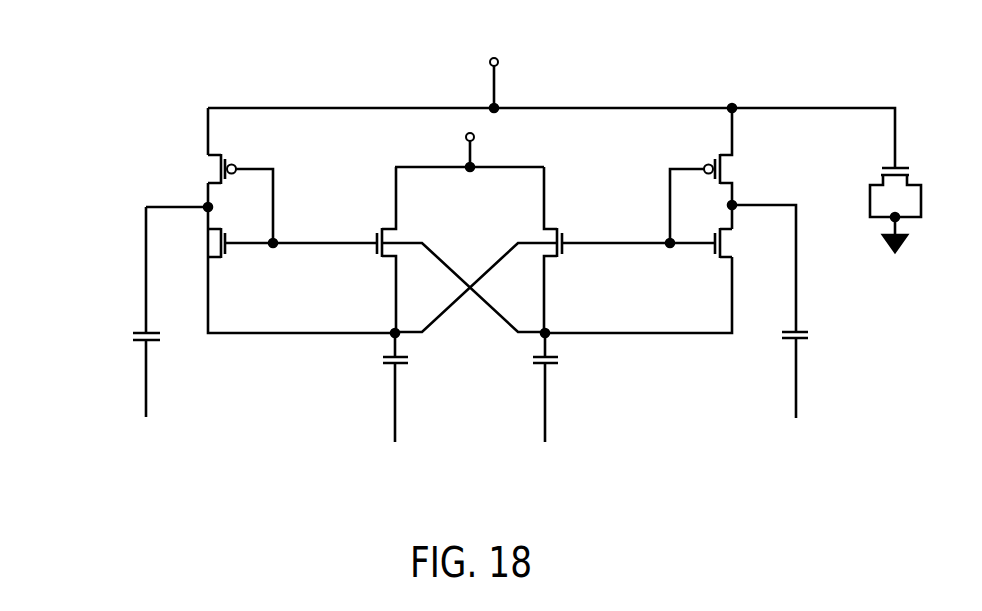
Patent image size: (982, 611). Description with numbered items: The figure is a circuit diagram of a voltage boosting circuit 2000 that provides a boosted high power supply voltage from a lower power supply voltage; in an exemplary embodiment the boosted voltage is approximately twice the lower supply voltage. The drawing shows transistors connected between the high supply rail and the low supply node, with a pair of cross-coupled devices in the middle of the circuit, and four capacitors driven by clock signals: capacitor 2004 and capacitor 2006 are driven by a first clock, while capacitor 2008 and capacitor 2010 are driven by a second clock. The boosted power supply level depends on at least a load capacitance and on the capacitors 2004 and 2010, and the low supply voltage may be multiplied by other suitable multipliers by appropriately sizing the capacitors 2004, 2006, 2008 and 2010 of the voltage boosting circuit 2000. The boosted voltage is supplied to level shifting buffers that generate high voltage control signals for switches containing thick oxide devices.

The voltage boosting circuit 2000 is at (183, 72).
The capacitor 2004 is at (130, 333).
The capacitor 2006 is at (384, 364).
The capacitor 2008 is at (534, 364).
The capacitor 2010 is at (777, 340).